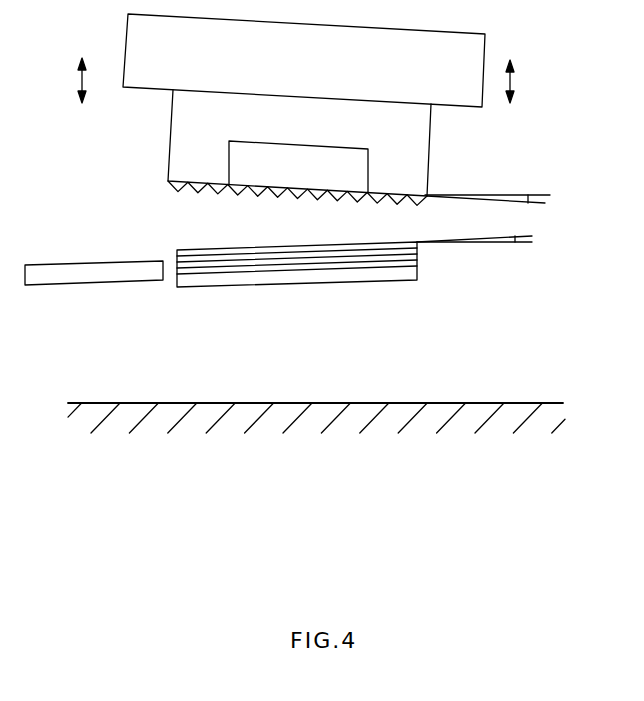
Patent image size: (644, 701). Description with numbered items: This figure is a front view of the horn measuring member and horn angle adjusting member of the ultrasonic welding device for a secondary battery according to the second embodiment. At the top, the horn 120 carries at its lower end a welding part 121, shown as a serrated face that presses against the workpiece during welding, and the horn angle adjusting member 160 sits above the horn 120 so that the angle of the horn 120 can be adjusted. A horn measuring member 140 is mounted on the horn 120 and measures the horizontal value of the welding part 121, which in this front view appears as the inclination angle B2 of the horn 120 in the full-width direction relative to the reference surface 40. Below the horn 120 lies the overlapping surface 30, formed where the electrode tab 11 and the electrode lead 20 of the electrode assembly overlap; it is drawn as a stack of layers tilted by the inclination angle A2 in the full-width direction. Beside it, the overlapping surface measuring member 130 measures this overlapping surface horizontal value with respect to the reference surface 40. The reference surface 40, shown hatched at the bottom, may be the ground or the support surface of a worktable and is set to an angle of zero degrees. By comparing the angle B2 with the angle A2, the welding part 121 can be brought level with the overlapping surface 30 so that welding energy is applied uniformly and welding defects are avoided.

The horn angle adjusting member 160 is at (472, 48).
The horn 120 is at (418, 130).
The horn measuring member 140 is at (360, 172).
The welding part 121 is at (187, 183).
The overlapping surface measuring member 130 is at (95, 270).
The electrode lead 20 is at (320, 291).
The overlapping surface 30 is at (320, 284).
The electrode tab 11 is at (378, 257).
The reference surface 40 is at (520, 410).
The inclination angle B2° of the horn in the full-width direction B2 is at (545, 203).
The inclination angle A2° of the overlapping surface in the full-width direction A2 is at (532, 236).